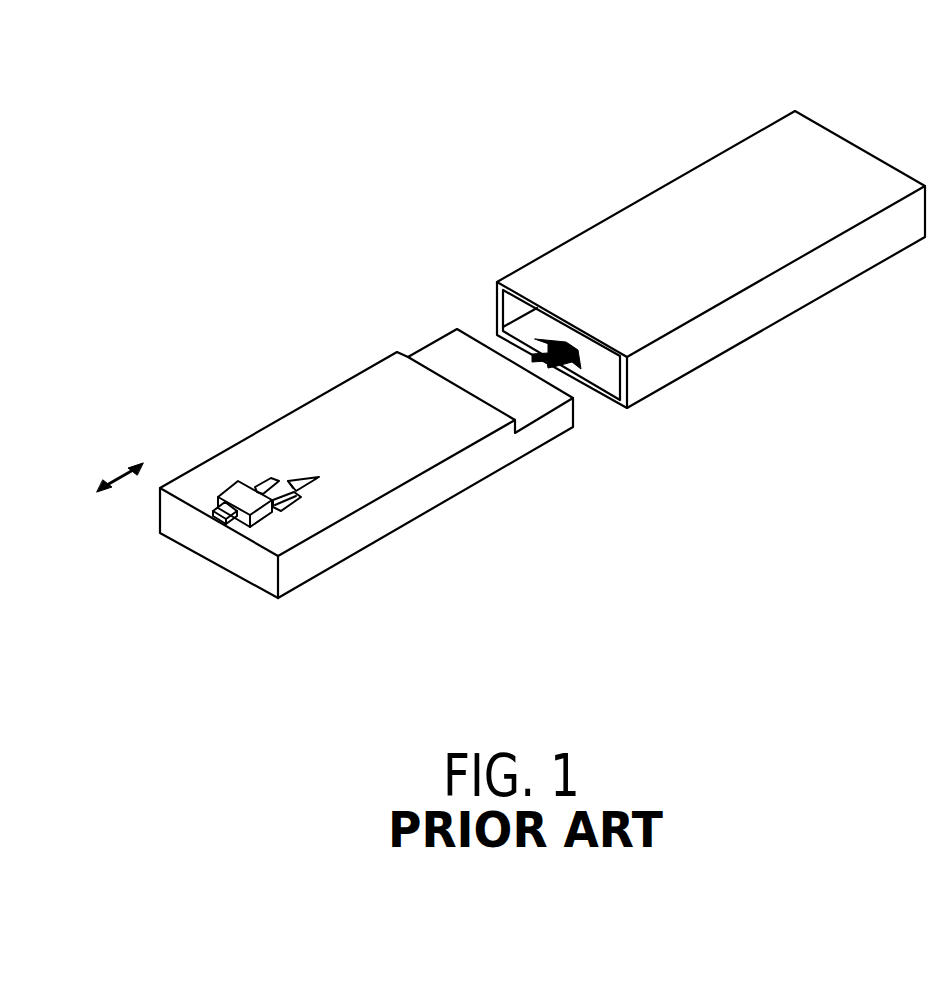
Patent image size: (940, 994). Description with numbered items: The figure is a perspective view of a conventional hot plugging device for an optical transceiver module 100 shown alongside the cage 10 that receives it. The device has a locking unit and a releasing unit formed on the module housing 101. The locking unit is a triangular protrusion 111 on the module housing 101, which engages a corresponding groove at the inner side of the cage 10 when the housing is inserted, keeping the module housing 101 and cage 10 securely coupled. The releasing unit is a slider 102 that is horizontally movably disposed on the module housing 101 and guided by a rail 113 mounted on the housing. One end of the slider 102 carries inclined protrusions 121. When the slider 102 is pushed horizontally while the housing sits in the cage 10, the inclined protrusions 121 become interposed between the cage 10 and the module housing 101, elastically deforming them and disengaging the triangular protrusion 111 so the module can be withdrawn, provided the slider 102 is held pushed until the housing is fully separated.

The cage 10 is at (727, 183).
The optical transceiver module 100 is at (389, 288).
The module housing 101 is at (462, 465).
The slider 102 is at (238, 490).
The triangular protrusion 111 is at (293, 477).
The rail 113 is at (222, 523).
The inclined protrusions 121 is at (265, 477).